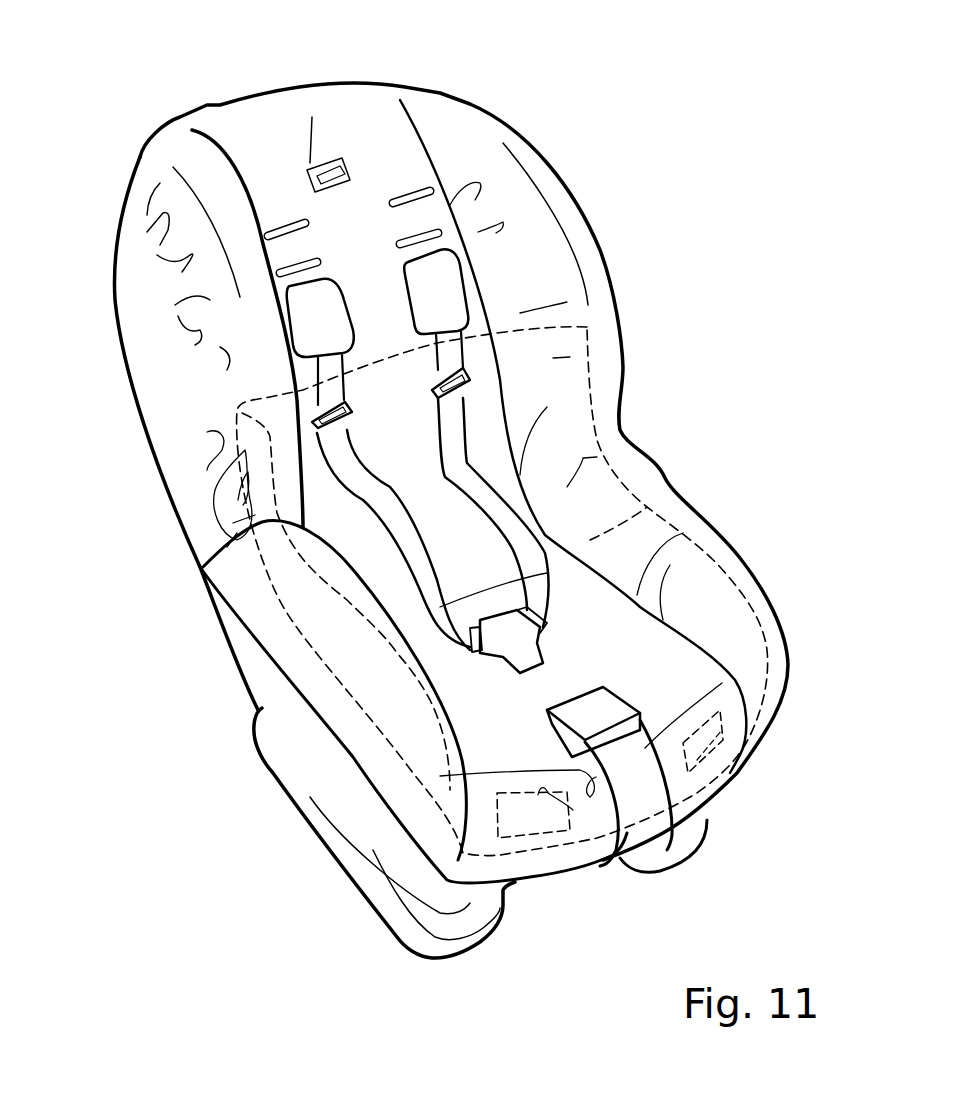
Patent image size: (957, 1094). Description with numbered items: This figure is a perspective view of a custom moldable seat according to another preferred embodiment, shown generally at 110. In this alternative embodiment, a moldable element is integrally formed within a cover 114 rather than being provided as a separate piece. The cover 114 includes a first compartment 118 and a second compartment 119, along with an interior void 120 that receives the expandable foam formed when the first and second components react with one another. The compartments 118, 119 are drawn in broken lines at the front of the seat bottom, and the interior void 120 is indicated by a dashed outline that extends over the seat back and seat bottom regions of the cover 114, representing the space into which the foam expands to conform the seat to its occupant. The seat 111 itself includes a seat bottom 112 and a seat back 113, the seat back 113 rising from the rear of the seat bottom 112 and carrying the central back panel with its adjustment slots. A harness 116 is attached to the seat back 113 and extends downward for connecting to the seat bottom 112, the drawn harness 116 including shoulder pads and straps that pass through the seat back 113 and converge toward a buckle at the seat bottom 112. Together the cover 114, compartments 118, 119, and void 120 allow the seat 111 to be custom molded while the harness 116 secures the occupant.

The custom moldable seat 110 is at (265, 65).
The seat 111 is at (217, 640).
The seat bottom 112 is at (520, 755).
The seat back 113 is at (392, 145).
The cover 114 is at (195, 480).
The harness 116 is at (445, 287).
The first compartment 118 is at (530, 830).
The second compartment 119 is at (708, 787).
The interior void 120 is at (643, 503).